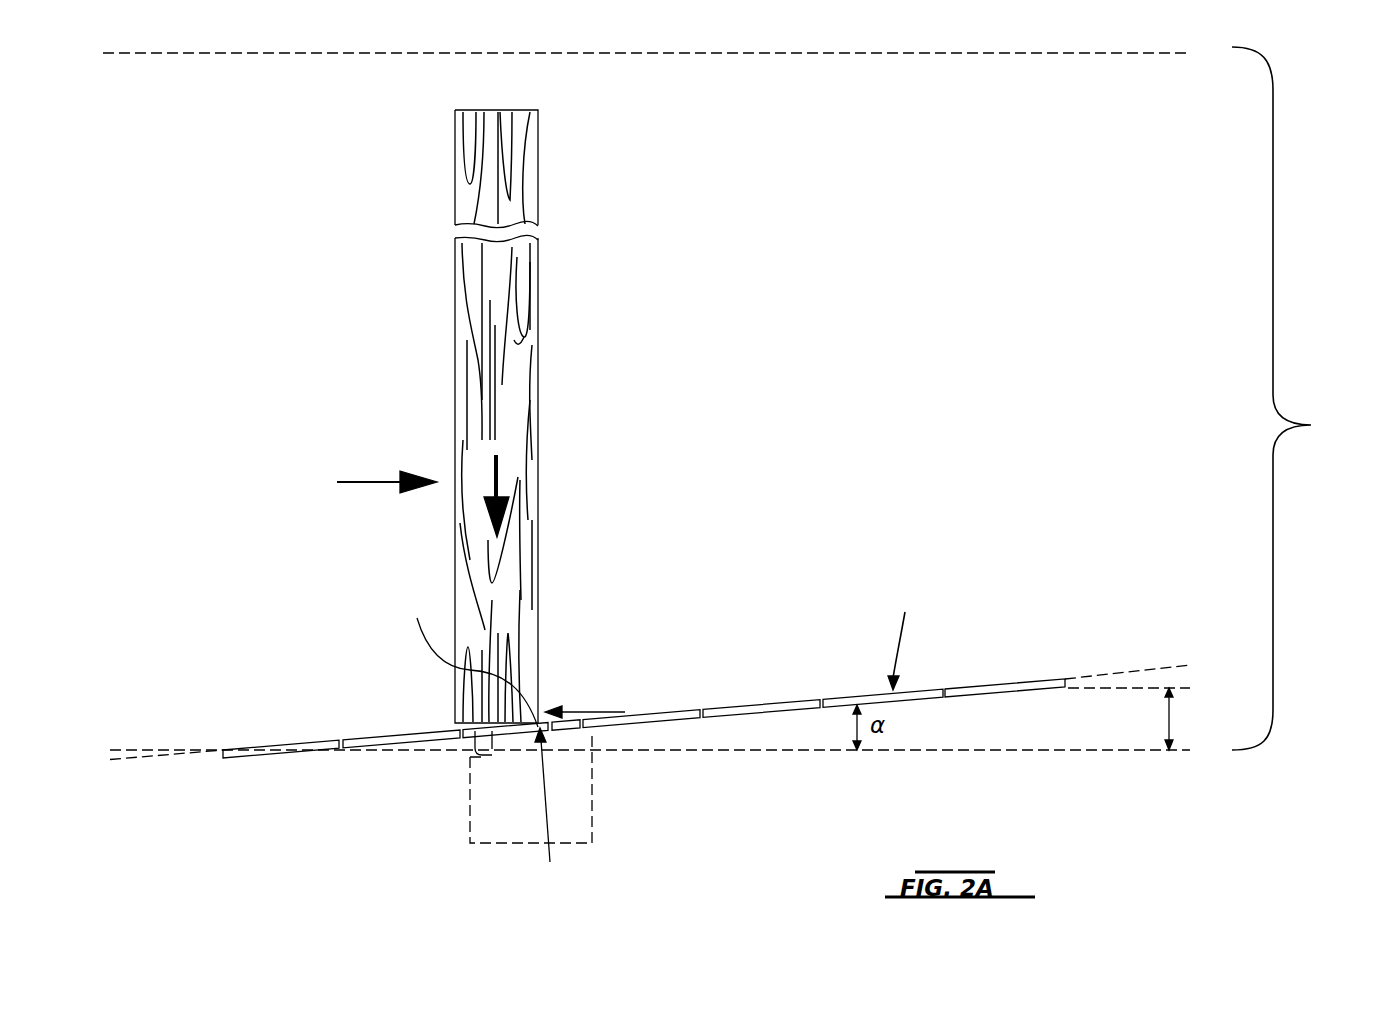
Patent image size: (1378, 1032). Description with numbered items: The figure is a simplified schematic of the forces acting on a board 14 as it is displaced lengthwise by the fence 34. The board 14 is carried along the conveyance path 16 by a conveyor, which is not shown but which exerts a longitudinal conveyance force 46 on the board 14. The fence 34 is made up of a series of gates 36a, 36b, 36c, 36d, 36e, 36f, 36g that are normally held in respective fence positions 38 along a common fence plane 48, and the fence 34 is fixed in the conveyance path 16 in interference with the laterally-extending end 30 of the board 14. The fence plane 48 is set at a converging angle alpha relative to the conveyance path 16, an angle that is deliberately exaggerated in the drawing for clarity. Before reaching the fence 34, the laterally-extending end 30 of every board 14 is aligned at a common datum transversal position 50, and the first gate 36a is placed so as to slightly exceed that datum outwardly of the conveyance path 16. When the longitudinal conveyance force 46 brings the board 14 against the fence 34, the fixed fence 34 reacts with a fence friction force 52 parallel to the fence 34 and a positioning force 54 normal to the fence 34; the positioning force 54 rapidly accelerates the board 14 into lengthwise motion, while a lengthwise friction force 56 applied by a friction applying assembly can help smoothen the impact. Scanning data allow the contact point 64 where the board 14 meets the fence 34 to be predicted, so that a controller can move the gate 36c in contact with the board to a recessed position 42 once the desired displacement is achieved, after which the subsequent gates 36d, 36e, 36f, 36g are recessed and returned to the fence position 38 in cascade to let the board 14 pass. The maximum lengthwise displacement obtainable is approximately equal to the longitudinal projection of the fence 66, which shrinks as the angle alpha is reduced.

The board 14 is at (527, 285).
The conveyance path 16 is at (1289, 398).
The laterally-extending end 30 is at (458, 725).
The fence 34 is at (908, 640).
The first gate 36a is at (313, 750).
The gate 36b is at (378, 742).
The gate 36c is at (572, 725).
The gate 36d is at (673, 715).
The gate 36e is at (788, 705).
The gate 36f is at (916, 695).
The gate 36g is at (1004, 690).
The fence position 38 is at (472, 760).
The recessed position 42 is at (508, 845).
The longitudinal conveyance force 46 is at (370, 482).
The fence plane 48 is at (1128, 668).
The datum transversal position 50 is at (1122, 752).
The fence friction force 52 is at (592, 708).
The positioning force 54 is at (550, 862).
The lengthwise friction force 56 is at (497, 450).
The contact point 64 is at (471, 663).
The longitudinal projection of the fence 66 is at (1172, 752).